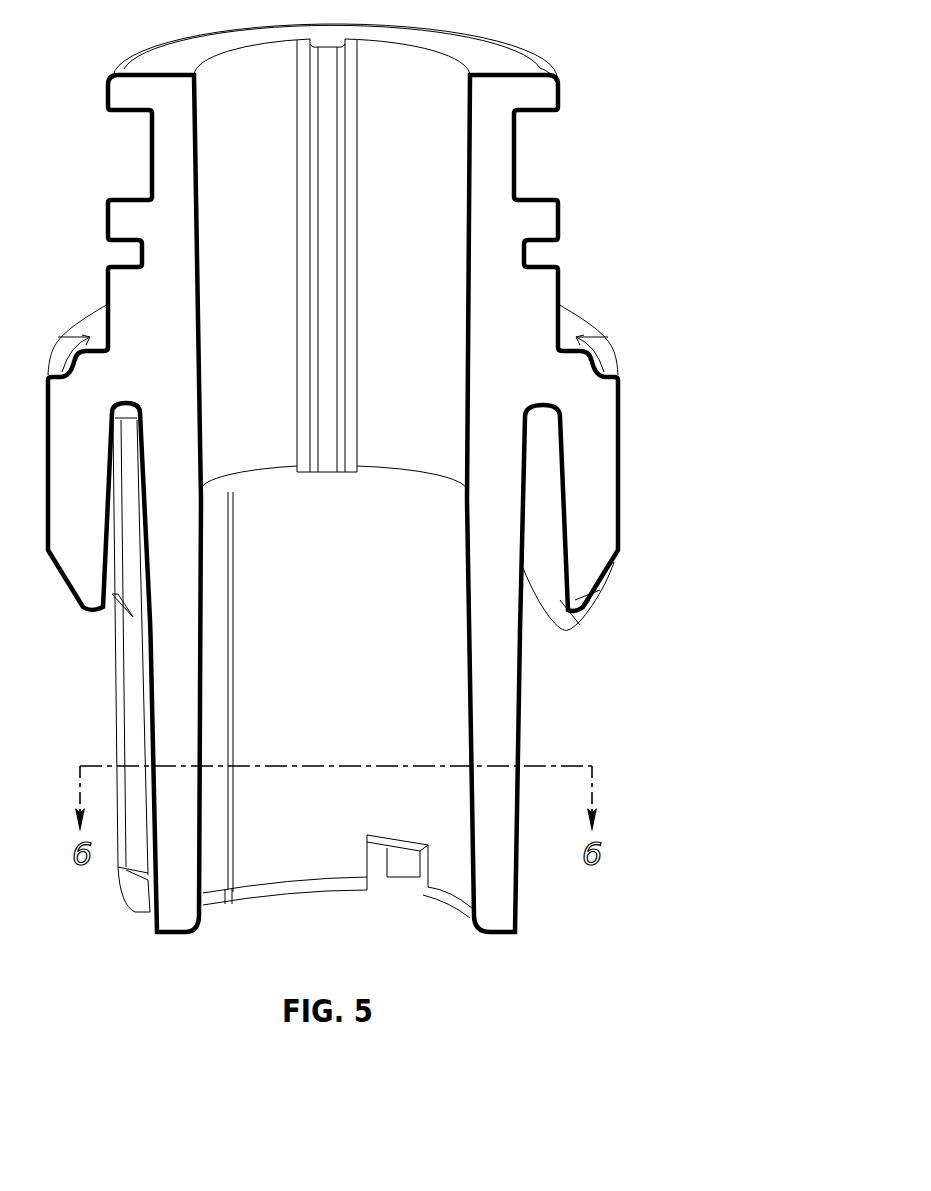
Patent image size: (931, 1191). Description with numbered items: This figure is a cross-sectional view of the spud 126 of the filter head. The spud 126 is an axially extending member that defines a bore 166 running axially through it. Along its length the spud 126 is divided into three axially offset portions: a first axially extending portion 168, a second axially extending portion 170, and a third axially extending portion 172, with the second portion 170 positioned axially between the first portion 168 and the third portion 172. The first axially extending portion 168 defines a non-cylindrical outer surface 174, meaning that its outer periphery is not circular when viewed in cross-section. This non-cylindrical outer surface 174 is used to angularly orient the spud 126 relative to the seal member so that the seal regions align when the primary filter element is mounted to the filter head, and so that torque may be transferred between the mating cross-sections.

The third axially extending portion 172 is at (478, 70).
The second axially extending portion 170 is at (585, 637).
The first axially extending portion 168 is at (528, 933).
The spud 126 is at (522, 693).
The non-cylindrical outer surface 174 is at (518, 905).
The bore 166 is at (300, 841).